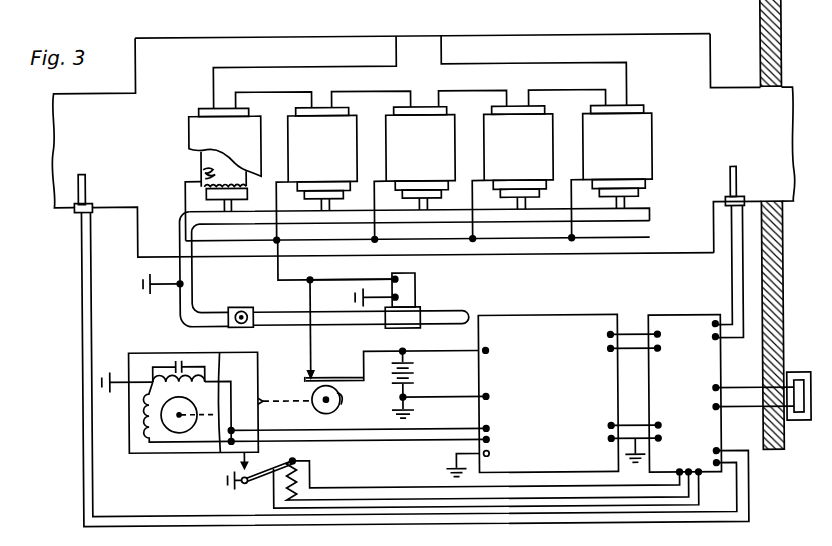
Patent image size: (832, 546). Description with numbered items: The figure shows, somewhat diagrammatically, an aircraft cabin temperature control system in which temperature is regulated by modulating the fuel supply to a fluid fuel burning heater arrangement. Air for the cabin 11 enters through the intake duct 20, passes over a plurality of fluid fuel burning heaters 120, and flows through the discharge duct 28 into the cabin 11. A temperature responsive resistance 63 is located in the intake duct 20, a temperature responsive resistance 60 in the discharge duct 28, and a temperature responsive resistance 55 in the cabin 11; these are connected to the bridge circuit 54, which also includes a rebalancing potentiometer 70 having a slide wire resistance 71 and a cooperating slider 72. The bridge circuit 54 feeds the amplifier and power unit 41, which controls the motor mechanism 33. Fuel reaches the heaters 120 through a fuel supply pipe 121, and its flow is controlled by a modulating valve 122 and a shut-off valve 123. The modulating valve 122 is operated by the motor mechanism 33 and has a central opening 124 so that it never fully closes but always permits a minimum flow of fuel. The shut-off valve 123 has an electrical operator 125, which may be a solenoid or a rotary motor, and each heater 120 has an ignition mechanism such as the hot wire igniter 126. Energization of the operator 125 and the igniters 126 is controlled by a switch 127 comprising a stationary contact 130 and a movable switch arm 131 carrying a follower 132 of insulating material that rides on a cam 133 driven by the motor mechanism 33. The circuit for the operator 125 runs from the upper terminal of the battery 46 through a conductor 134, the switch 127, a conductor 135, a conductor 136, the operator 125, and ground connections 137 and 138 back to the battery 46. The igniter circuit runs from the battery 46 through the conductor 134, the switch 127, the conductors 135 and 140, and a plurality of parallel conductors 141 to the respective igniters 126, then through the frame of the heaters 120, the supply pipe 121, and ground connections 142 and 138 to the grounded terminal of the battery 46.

The cabin 11 is at (805, 244).
The intake duct 20 is at (84, 98).
The discharge duct 28 is at (738, 90).
The motor mechanism 33 is at (165, 452).
The amplifier and power unit 41 is at (548, 315).
The battery 46 is at (415, 373).
The bridge circuit 54 is at (668, 315).
The temperature responsive resistance 55 is at (797, 425).
The temperature responsive resistance 60 is at (731, 180).
The temperature responsive resistance 63 is at (86, 186).
The rebalancing potentiometer 70 is at (274, 486).
The slide wire resistance 71 is at (298, 470).
The slider 72 is at (256, 472).
The fluid fuel burning heaters 120 is at (190, 128).
The fuel supply pipe 121 is at (192, 268).
The modulating valve 122 is at (234, 304).
The shut-off valve 123 is at (417, 309).
The opening 124 is at (247, 304).
The electrical operator 125 is at (412, 278).
The hot wire igniter 126 is at (204, 168).
The switch 127 is at (330, 362).
The stationary contact 130 is at (310, 371).
The movable switch arm 131 is at (356, 384).
The follower 132 is at (304, 380).
The cam 133 is at (341, 403).
The conductor 134 is at (365, 352).
The conductor 135 is at (311, 296).
The conductor 136 is at (328, 278).
The ground connection 137 is at (375, 293).
The ground connection 138 is at (418, 411).
The conductor 140 is at (278, 262).
The parallel conductors 141 is at (243, 242).
The ground connection 142 is at (156, 292).